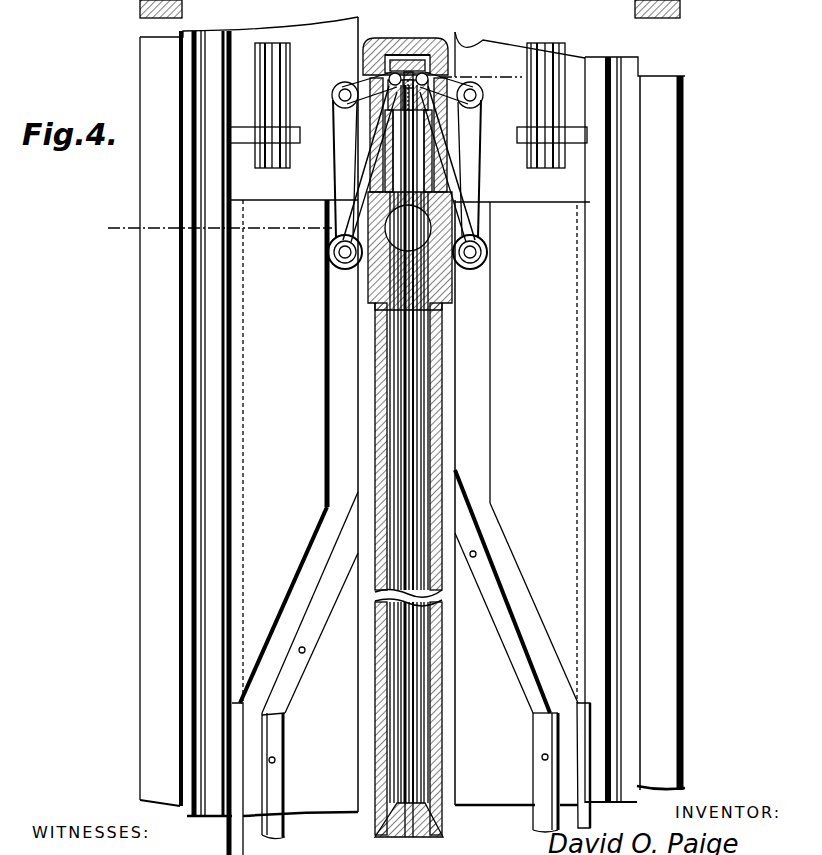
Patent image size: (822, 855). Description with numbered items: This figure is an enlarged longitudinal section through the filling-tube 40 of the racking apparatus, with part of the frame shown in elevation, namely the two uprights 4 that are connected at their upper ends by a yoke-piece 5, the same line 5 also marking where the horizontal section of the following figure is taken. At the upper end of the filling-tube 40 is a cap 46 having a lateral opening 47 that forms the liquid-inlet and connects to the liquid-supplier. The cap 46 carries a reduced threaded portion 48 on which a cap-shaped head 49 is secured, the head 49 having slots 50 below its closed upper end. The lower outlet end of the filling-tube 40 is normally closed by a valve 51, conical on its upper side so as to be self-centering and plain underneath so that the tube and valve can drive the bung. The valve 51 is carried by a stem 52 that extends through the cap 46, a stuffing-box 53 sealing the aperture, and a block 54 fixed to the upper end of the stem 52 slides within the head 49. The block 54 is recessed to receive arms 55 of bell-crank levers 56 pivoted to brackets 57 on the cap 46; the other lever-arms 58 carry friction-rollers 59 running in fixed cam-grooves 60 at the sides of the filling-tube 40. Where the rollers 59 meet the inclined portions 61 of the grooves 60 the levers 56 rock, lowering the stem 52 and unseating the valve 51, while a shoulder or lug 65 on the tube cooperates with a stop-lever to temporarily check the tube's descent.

The upright 4 is at (140, 553).
The yoke-piece 5 is at (305, 153).
The filling-tube 40 is at (440, 428).
The cap 46 is at (455, 284).
The lateral opening 47 is at (418, 226).
The reduced threaded portion 48 is at (435, 180).
The cap-shaped head 49 is at (408, 95).
The slots 50 is at (378, 110).
The valve 51 is at (445, 836).
The stem 52 is at (410, 480).
The stuffing-box 53 is at (428, 160).
The block 54 is at (420, 58).
The arms 55 is at (368, 80).
The bell-crank levers 56 is at (408, 104).
The brackets 57 is at (362, 156).
The lever-arms 58 is at (348, 194).
The friction-rollers 59 is at (330, 262).
The cam-grooves 60 is at (410, 436).
The inclined portions 61 is at (303, 575).
The shoulder or lug 65 is at (410, 9).